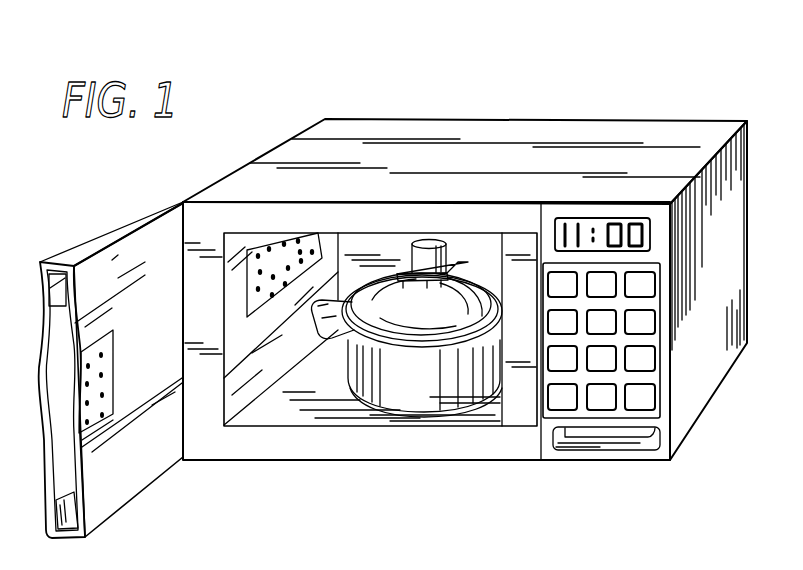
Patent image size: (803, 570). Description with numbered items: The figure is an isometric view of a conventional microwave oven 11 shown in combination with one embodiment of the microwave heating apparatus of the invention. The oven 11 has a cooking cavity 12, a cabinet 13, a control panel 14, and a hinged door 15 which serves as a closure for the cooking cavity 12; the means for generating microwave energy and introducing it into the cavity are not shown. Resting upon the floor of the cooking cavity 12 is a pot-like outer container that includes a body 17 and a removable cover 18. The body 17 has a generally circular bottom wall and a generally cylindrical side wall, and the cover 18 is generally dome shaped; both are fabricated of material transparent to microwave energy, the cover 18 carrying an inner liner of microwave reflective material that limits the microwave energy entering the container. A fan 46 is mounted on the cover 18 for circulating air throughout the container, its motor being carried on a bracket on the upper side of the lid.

The microwave oven 11 is at (424, 119).
The cooking cavity 12 is at (302, 346).
The cabinet 13 is at (564, 134).
The control panel 14 is at (660, 373).
The hinged door 15 is at (112, 267).
The body 17 is at (422, 390).
The cover 18 is at (456, 283).
The fan 46 is at (413, 250).